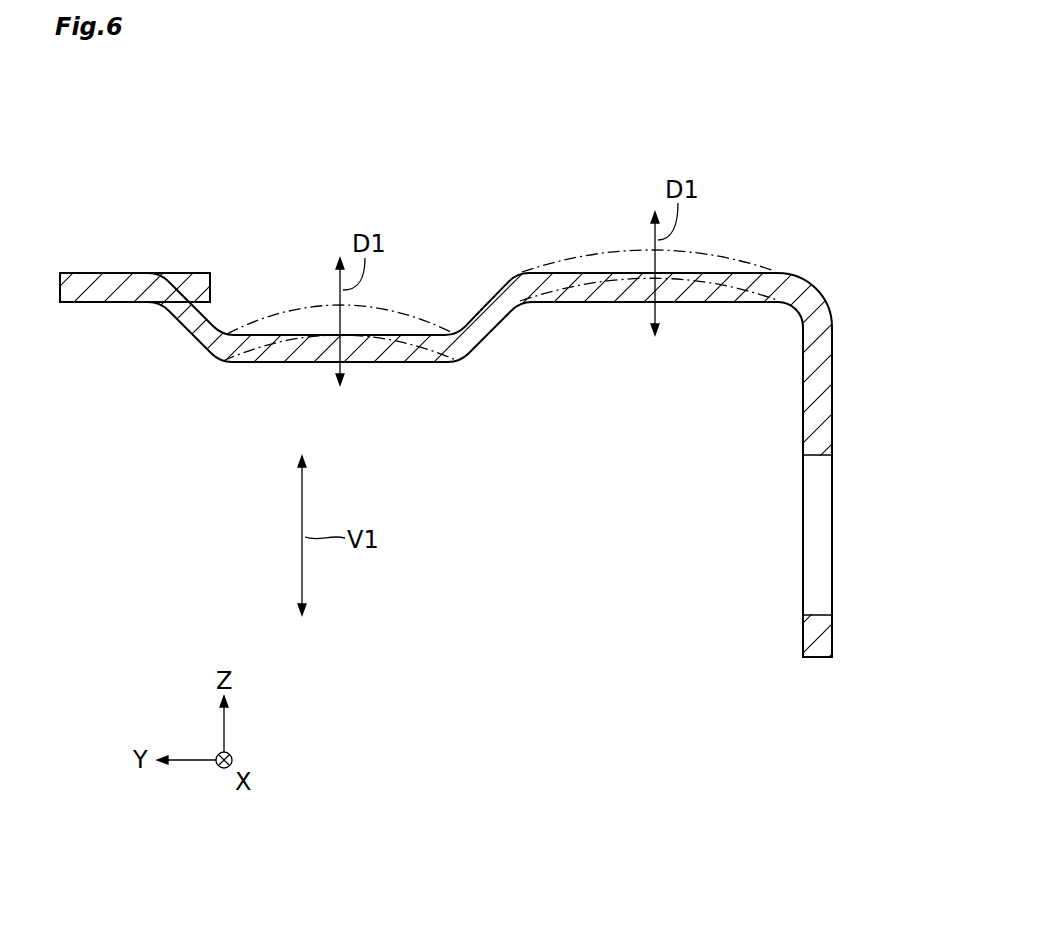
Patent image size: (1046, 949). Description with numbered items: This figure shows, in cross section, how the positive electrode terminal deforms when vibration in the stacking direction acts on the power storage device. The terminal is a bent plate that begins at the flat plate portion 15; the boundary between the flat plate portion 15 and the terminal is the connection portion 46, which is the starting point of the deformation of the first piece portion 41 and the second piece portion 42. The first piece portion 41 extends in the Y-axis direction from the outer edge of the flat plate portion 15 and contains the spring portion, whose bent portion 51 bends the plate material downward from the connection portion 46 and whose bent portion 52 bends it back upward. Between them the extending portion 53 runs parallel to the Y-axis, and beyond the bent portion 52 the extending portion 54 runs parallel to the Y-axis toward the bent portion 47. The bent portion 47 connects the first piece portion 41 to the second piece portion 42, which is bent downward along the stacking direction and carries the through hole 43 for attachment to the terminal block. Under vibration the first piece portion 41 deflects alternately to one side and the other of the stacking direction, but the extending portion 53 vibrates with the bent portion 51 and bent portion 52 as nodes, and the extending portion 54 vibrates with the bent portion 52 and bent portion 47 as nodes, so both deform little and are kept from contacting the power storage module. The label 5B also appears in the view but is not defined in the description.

The flat plate portion 15 is at (86, 264).
The connection portion 46 is at (175, 268).
The bent portion (first bent portion) 51 is at (181, 326).
The extending portion 53 is at (368, 364).
The bent portion (second bent portion) 52 is at (494, 338).
The extending portion 54 is at (680, 304).
The first piece portion 41 is at (600, 312).
The bent portion 47 is at (816, 276).
The second piece portion 42 is at (845, 402).
The through hole 43 is at (813, 458).
The bracket 5B is at (558, 194).